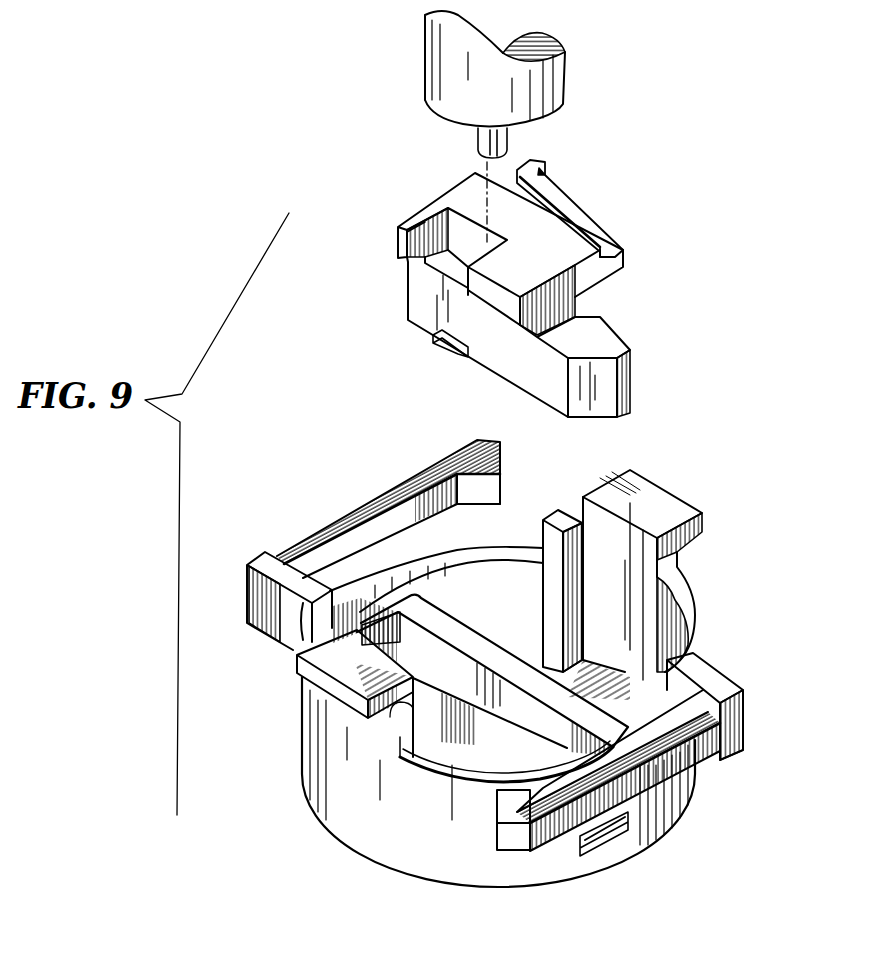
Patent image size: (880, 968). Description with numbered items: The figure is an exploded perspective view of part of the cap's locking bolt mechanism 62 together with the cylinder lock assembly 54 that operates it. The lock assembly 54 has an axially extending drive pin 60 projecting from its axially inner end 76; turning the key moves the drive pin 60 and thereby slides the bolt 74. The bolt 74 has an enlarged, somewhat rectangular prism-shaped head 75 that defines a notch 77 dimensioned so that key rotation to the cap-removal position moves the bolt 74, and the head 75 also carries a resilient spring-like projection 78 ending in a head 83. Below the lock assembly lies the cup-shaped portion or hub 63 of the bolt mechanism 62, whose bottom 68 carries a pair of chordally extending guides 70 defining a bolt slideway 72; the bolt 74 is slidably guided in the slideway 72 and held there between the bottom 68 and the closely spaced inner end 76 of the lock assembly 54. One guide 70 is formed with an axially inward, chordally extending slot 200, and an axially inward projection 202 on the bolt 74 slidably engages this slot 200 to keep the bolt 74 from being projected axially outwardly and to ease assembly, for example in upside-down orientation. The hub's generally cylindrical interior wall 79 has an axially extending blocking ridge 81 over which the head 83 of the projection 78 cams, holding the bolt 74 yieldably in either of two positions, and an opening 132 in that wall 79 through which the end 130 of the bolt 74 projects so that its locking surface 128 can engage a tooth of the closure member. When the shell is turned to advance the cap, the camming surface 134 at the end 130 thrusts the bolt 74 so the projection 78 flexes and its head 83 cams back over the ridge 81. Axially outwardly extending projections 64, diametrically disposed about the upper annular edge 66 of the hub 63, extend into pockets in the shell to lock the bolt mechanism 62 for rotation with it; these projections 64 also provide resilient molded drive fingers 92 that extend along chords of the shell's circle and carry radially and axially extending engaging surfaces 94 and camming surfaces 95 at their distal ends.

The cylinder lock assembly 54 is at (571, 64).
The axially inner end of the lock assembly 76 is at (440, 115).
The drive pin 60 is at (483, 145).
The head of projection 83 is at (546, 168).
The notch 77 is at (430, 222).
The resilient spring-like projection 78 is at (588, 220).
The bolt 74 is at (418, 297).
The head 75 is at (560, 278).
The axially inward projection 202 is at (450, 352).
The locking surface 128 is at (600, 349).
The end of bolt 130 is at (618, 353).
The camming surface 134 is at (605, 384).
The locking bolt mechanism 62 is at (752, 609).
The cup-shaped portion 63 is at (462, 560).
The axially outwardly extending projections 64 is at (338, 664).
The resilient molded drive fingers 92 is at (396, 498).
The engaging surfaces 94 is at (503, 461).
The camming surfaces 95 is at (466, 456).
The chordally extending guides 70 is at (463, 636).
The bolt slideway 72 is at (540, 700).
The blocking ridge 81 is at (552, 600).
The upper annular edge 66 is at (676, 580).
The cylindrical interior wall 79 is at (648, 612).
The bottom 68 is at (622, 690).
The opening 132 is at (608, 836).
The chordally extending slot 200 is at (598, 853).